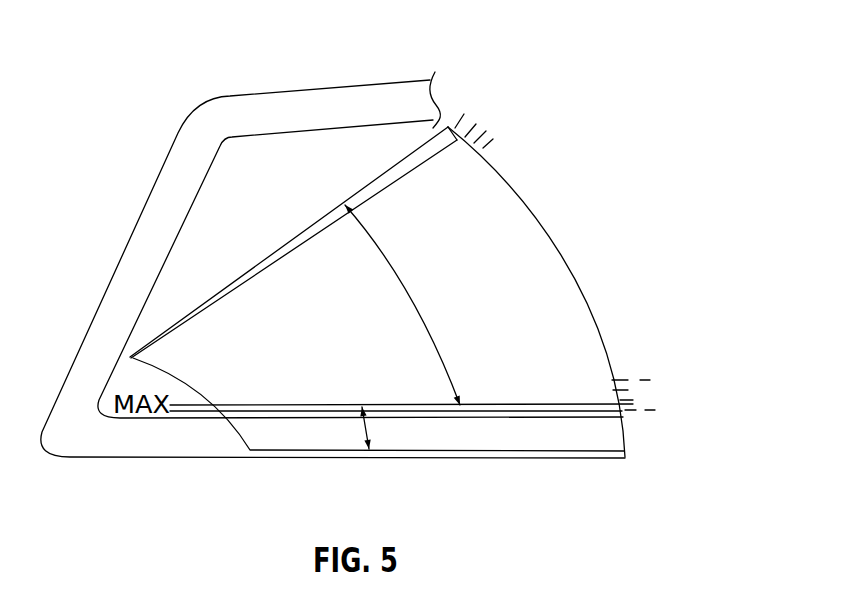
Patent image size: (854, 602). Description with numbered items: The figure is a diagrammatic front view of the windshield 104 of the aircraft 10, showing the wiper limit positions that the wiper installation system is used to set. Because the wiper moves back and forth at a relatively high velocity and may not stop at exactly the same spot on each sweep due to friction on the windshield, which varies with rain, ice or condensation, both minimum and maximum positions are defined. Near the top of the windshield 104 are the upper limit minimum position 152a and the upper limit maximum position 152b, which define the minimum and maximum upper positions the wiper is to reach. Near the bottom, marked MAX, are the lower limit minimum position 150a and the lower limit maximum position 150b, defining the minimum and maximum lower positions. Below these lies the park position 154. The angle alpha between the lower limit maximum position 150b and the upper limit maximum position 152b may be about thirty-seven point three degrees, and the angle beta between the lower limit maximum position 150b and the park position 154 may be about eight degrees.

The aircraft 10 is at (387, 62).
The windshield 104 is at (262, 152).
The upper limit minimum position 152a is at (445, 142).
The upper limit maximum position 152b is at (432, 138).
The lower limit minimum position 150a is at (560, 403).
The lower limit maximum position 150b is at (607, 412).
The park position 154 is at (500, 460).